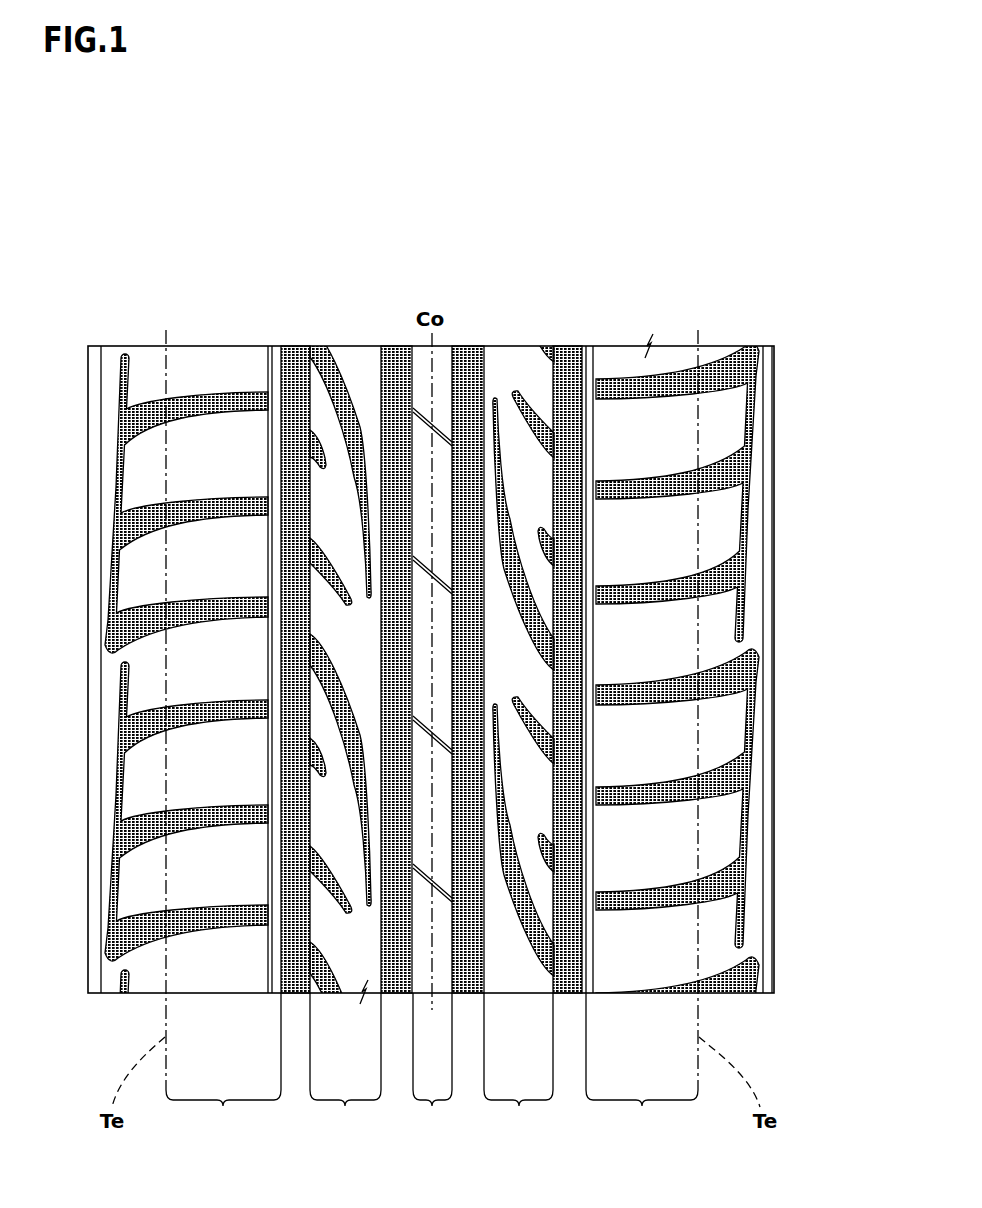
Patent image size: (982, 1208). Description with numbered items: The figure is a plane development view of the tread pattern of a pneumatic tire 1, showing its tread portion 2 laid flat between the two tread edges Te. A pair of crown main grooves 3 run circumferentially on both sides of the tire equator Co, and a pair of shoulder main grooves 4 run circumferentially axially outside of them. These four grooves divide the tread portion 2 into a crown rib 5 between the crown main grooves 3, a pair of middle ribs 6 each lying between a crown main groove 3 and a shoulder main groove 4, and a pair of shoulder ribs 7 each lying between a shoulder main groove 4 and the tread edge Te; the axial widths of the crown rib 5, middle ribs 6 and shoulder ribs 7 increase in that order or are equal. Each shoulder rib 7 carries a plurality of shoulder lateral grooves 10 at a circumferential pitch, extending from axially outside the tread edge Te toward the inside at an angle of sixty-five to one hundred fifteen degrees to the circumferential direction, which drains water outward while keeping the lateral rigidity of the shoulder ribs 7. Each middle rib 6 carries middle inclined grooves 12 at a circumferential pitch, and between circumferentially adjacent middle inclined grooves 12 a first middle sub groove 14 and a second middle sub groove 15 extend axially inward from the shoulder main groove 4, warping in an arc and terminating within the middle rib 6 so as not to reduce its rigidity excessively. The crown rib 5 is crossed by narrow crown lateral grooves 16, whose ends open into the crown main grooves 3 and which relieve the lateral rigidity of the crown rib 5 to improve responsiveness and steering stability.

The pneumatic tire 1 is at (738, 240).
The tread portion 2 is at (733, 333).
The crown main groove 3 is at (397, 372).
The shoulder main groove 4 is at (294, 372).
The crown rib 5 is at (432, 1063).
The middle rib 6 is at (431, 1063).
The shoulder rib 7 is at (432, 1063).
The shoulder lateral groove 10 is at (627, 386).
The middle inclined groove 12 is at (525, 897).
The first middle sub groove 14 is at (533, 718).
The second middle sub groove 15 is at (547, 850).
The crown lateral groove 16 is at (443, 893).